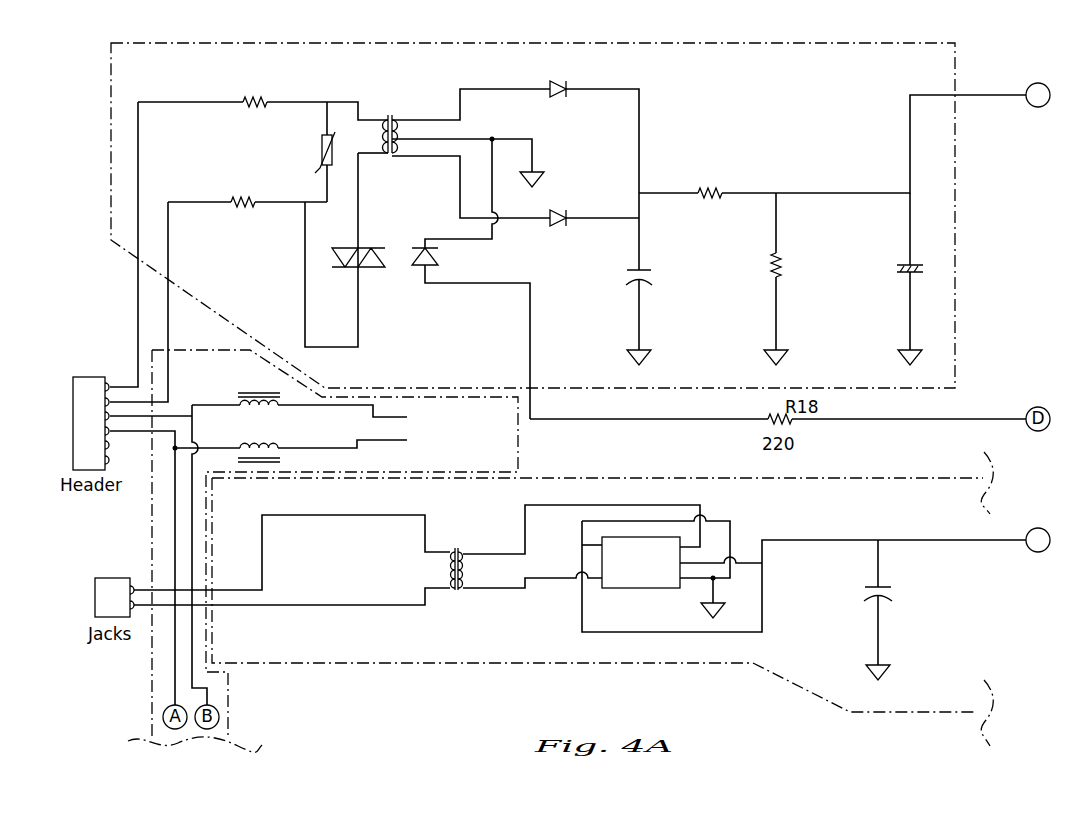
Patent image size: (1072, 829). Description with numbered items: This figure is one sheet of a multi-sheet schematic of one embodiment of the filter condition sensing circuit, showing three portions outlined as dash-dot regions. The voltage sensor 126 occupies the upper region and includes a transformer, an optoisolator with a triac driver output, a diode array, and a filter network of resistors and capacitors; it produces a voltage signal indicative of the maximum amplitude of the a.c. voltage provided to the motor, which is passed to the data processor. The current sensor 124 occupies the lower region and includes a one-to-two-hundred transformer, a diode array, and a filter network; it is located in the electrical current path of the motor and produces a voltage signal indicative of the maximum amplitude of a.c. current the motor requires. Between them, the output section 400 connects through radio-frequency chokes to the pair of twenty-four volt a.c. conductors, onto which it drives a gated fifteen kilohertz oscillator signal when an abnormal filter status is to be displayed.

The voltage sensor 126 is at (794, 113).
The current sensor 124 is at (838, 520).
The output section 400 is at (396, 466).